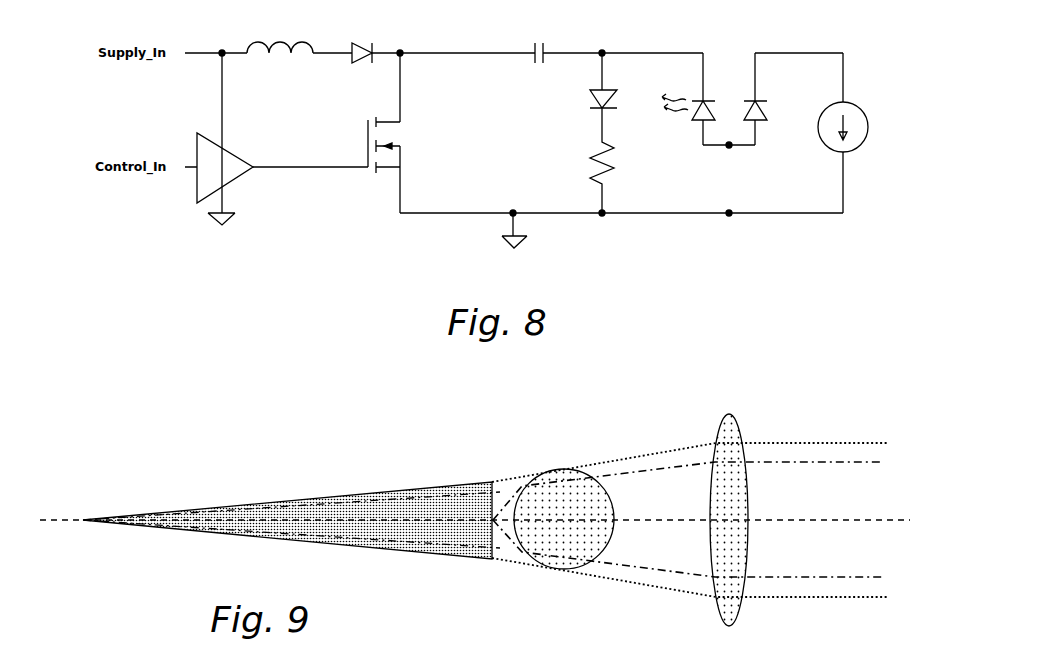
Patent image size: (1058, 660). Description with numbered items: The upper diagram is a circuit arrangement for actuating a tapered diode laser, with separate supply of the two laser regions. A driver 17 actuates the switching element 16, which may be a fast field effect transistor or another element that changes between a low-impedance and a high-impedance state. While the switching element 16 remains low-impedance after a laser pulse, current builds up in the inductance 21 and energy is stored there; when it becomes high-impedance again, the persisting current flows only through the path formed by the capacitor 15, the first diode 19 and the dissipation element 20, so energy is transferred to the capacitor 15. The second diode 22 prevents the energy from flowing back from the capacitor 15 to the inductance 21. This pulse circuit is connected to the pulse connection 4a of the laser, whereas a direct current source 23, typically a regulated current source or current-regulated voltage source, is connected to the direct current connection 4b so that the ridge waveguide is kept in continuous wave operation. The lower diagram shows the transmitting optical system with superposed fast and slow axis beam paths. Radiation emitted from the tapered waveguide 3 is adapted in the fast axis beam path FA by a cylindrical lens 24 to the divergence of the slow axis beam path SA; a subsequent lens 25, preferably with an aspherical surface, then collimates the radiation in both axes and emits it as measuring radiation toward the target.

In FIG. 8, the inductance 21 is at (280, 28).
In FIG. 8, the second diode 22 is at (357, 33).
In FIG. 8, the capacitor 15 is at (545, 33).
In FIG. 8, the driver 17 is at (242, 167).
In FIG. 8, the switching element 16 is at (410, 145).
In FIG. 8, the first diode 19 is at (585, 95).
In FIG. 8, the dissipation element 20 is at (583, 175).
In FIG. 8, the pulse connection 4a is at (706, 100).
In FIG. 8, the direct current connection 4b is at (770, 100).
In FIG. 8, the direct current source 23 is at (859, 133).
In FIG. 9, the tapered waveguide 3 is at (297, 507).
In FIG. 9, the cylindrical lens 24 is at (557, 495).
In FIG. 9, the lens 25 is at (722, 463).
In FIG. 9, the slow axis beam path SA is at (595, 572).
In FIG. 9, the fast axis beam path FA is at (695, 573).